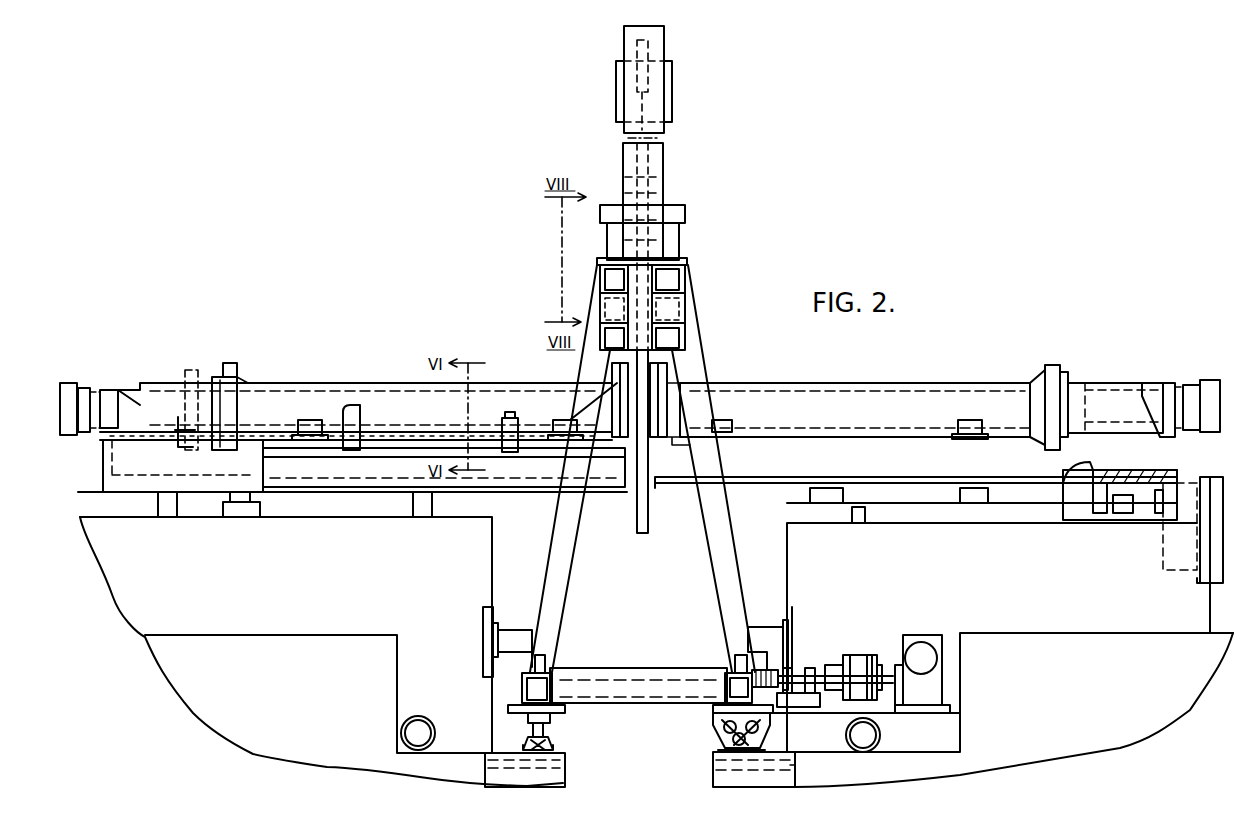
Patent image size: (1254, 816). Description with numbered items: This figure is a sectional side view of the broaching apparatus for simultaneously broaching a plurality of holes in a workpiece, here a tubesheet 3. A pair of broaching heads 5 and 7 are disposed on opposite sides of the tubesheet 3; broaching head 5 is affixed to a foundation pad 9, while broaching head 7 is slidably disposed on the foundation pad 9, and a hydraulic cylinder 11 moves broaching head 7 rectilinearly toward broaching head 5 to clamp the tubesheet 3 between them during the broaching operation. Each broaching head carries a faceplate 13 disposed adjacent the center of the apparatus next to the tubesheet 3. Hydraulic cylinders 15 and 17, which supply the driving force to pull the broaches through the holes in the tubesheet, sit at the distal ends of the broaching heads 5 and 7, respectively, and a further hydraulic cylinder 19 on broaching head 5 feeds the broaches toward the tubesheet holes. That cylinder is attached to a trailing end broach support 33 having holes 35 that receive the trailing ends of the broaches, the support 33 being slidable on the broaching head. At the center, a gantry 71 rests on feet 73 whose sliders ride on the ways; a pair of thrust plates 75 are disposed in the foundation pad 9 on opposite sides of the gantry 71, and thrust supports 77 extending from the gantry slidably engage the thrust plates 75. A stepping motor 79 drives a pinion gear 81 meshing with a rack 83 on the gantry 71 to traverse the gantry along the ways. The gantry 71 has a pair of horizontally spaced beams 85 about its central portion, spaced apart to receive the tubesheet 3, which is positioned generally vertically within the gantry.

The tubesheet 3 is at (650, 512).
The broaching head 5 is at (526, 388).
The broaching head 7 is at (853, 386).
The foundation pad 9 is at (122, 581).
The hydraulic cylinder 11 is at (1167, 523).
The faceplate 13 is at (620, 373).
The hydraulic cylinder 15 is at (115, 388).
The hydraulic cylinder 17 is at (1150, 386).
The hydraulic cylinder 19 is at (186, 380).
The trailing end broach support 33 is at (360, 418).
The holes 35 is at (518, 420).
The gantry 71 is at (683, 214).
The feet 73 is at (718, 717).
The thrust plates 75 is at (483, 628).
The thrust supports 77 is at (503, 632).
The stepping motor 79 is at (920, 637).
The pinion gear 81 is at (765, 668).
The rack 83 is at (765, 694).
The beams 85 is at (665, 280).